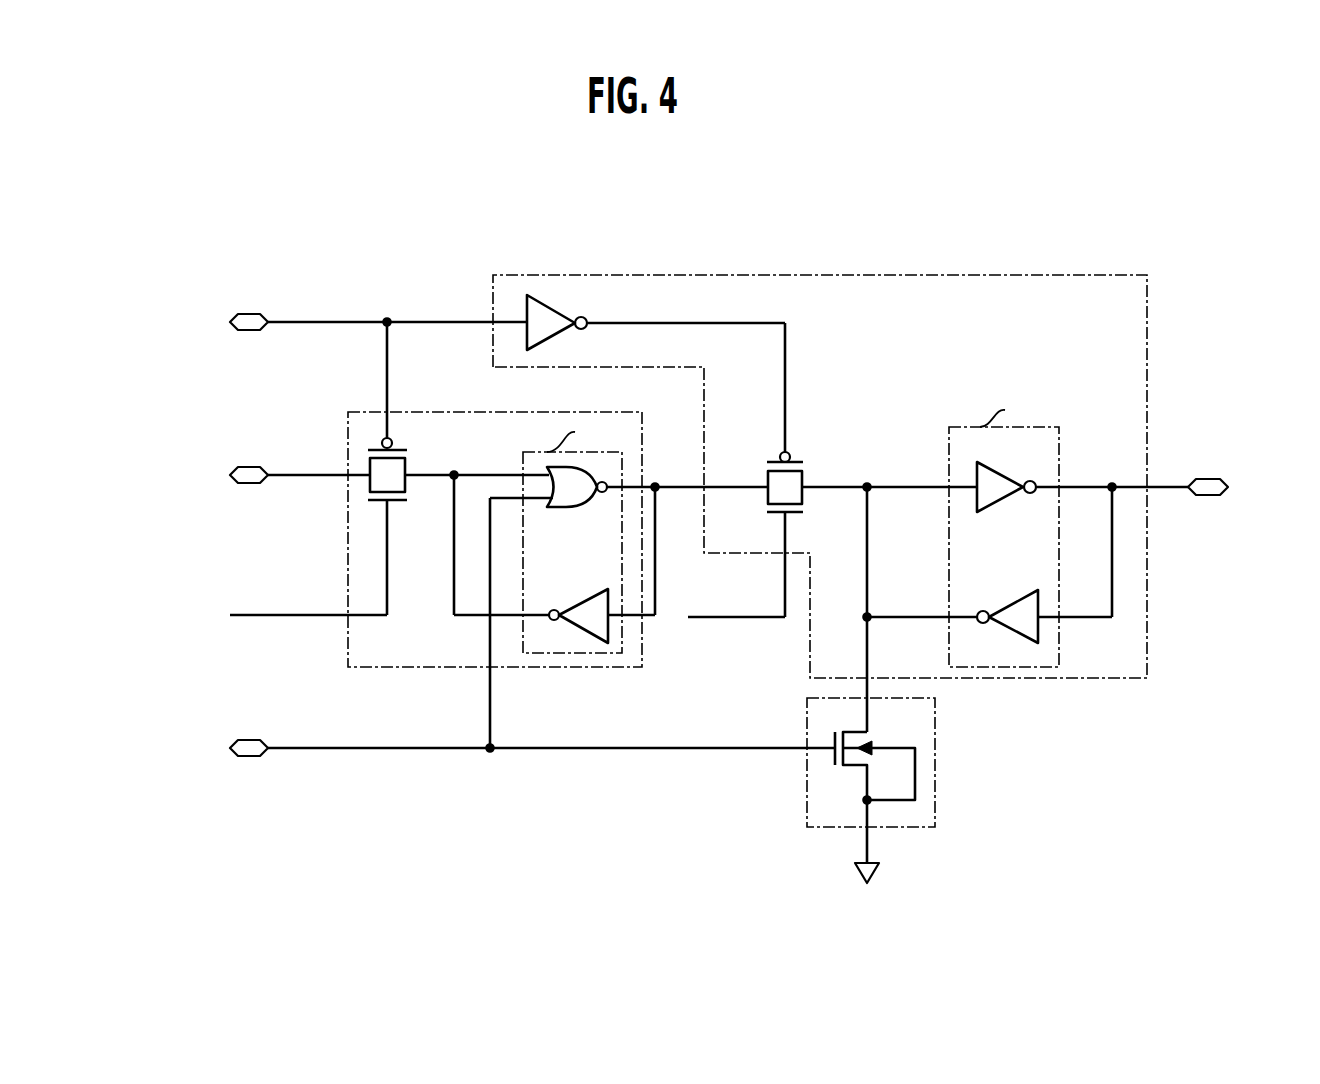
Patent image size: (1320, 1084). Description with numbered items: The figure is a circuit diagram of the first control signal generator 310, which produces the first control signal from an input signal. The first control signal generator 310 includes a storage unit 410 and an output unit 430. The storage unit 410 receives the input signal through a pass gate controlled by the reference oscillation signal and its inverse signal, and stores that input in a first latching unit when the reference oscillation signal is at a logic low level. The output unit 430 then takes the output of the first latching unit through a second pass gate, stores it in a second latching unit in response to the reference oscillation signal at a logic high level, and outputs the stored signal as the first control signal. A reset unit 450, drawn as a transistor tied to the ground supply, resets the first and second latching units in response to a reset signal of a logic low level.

The first control signal generator 310 is at (172, 240).
The storage unit 410 is at (575, 412).
The output unit 430 is at (1082, 275).
The reset unit 450 is at (935, 768).